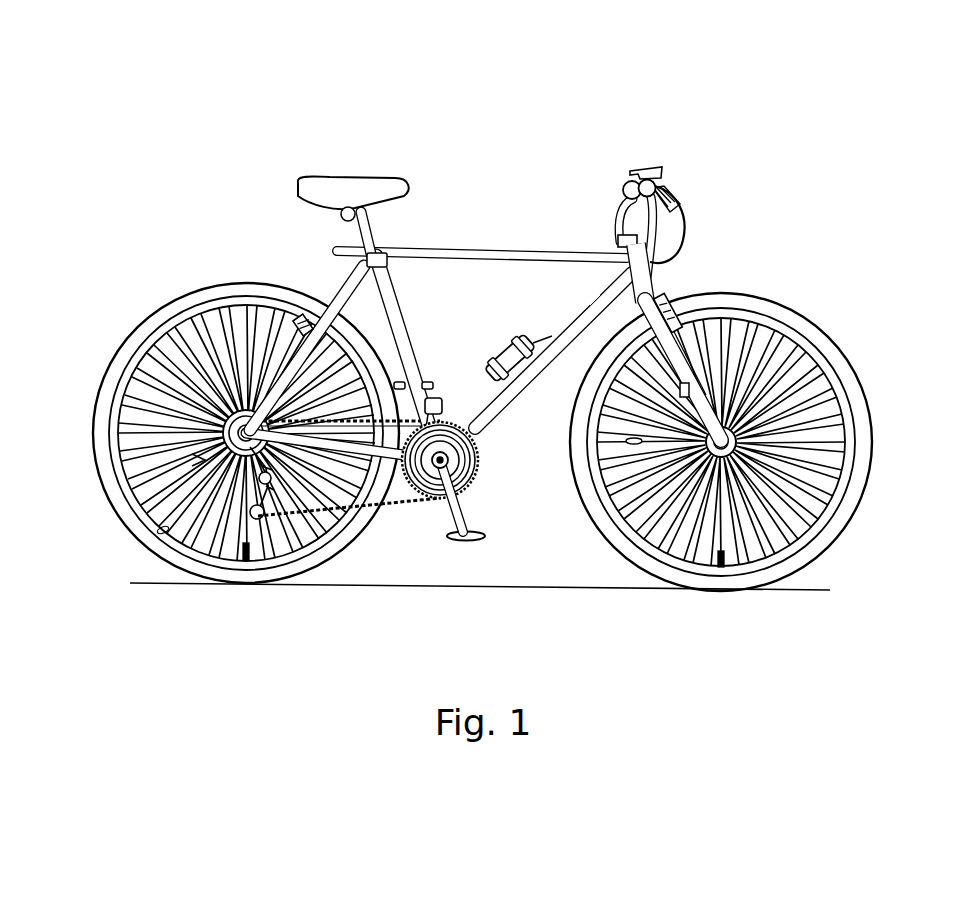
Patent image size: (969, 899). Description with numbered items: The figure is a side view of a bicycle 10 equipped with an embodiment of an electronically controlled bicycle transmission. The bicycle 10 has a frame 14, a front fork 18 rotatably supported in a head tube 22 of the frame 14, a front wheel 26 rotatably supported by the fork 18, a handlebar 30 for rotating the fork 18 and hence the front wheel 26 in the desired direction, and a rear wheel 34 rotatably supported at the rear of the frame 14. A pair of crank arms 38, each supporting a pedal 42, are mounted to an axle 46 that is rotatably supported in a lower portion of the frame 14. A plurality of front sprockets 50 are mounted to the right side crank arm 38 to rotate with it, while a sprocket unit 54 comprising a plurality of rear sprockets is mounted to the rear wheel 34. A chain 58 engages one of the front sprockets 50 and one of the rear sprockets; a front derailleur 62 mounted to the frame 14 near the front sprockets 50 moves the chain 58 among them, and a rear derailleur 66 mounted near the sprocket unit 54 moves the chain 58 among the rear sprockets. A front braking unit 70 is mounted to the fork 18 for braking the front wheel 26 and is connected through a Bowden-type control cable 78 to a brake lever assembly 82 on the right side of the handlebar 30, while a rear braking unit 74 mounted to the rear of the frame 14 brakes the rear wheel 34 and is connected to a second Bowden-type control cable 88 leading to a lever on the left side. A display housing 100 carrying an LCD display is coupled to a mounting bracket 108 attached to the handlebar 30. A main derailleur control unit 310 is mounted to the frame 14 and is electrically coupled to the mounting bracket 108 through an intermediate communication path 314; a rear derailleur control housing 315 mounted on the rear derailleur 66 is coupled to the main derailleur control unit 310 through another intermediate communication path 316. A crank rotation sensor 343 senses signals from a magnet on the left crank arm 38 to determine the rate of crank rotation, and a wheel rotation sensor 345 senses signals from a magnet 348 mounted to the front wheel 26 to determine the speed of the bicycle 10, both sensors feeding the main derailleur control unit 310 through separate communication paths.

The bicycle 10 is at (409, 67).
The frame 14 is at (471, 249).
The front fork 18 is at (650, 308).
The head tube 22 is at (618, 241).
The front wheel 26 is at (858, 375).
The handlebar 30 is at (623, 185).
The rear wheel 34 is at (128, 340).
The crank arm 38 is at (462, 511).
The pedal 42 is at (424, 380).
The axle 46 is at (448, 461).
The front sprockets 50 is at (479, 447).
The sprocket unit 54 is at (226, 430).
The chain 58 is at (397, 516).
The front derailleur 62 is at (434, 398).
The rear derailleur 66 is at (190, 460).
The front braking unit 70 is at (680, 323).
The rear braking unit 74 is at (300, 318).
The control cable 78 is at (657, 272).
The brake lever assembly 82 is at (683, 198).
The control cable 88 is at (341, 278).
The display housing 100 is at (650, 166).
The mounting bracket 108 is at (661, 171).
The main derailleur control unit 310 is at (517, 343).
The intermediate communication path 314 is at (563, 330).
The rear derailleur control housing 315 is at (158, 532).
The intermediate communication path 316 is at (487, 399).
The crank rotation sensor 343 is at (352, 408).
The wheel rotation sensor 345 is at (690, 389).
The magnet 348 is at (633, 450).